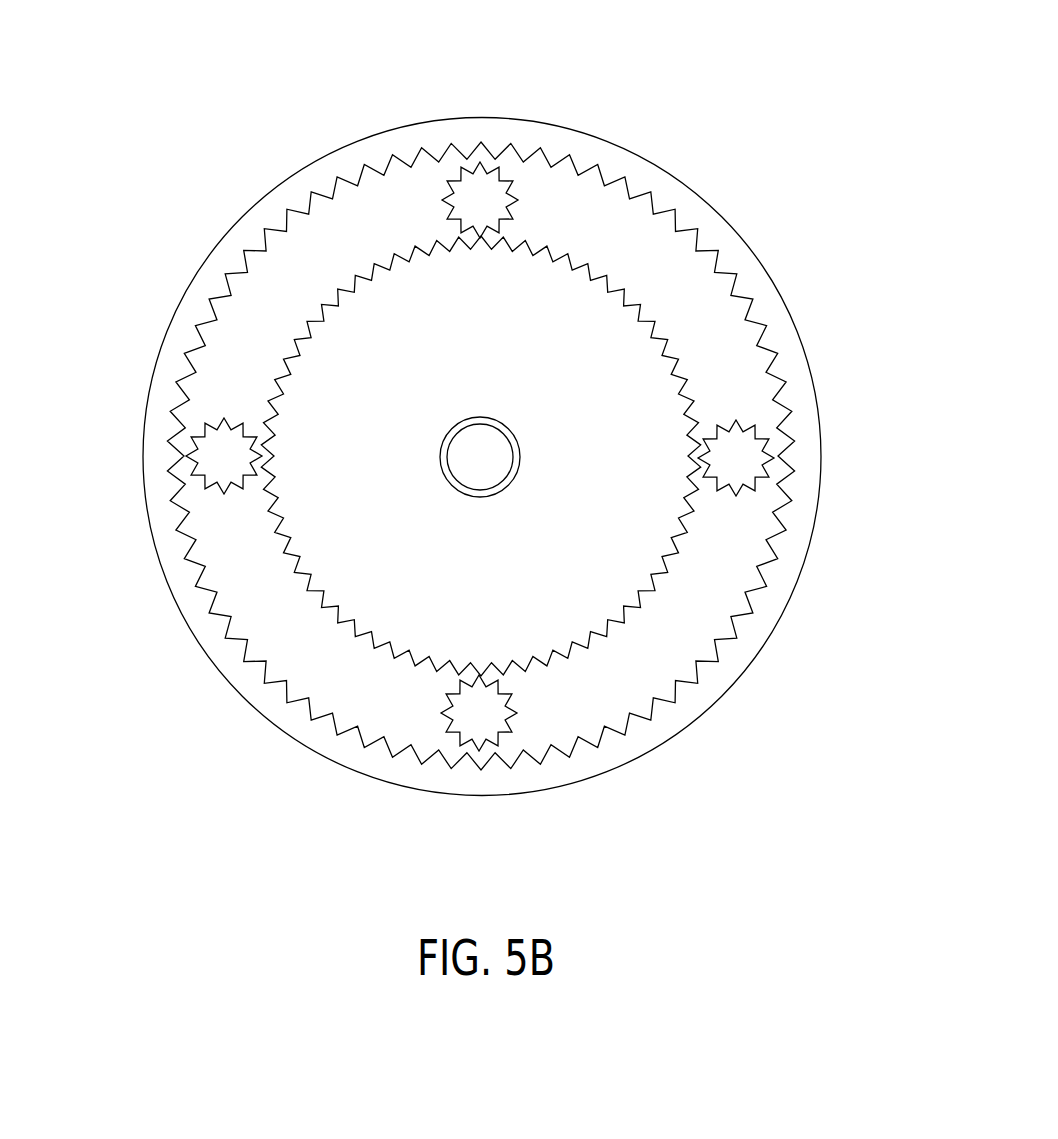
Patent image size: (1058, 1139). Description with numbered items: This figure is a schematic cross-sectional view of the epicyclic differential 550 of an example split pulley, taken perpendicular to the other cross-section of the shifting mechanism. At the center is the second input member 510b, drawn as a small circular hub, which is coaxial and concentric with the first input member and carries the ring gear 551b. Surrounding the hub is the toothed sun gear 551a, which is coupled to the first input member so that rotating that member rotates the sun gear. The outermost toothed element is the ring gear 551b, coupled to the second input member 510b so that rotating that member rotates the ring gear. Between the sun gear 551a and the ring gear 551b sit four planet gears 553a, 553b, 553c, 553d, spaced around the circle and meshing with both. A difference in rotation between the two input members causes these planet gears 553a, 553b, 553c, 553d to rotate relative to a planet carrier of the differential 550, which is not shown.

The epicyclic differential 550 is at (743, 78).
The sun gear 551a is at (576, 388).
The ring gear 551b is at (780, 583).
The second input member 510b is at (500, 468).
The planet gear 553a is at (477, 718).
The planet gear 553b is at (478, 196).
The planet gear 553c is at (745, 468).
The planet gear 553d is at (223, 456).